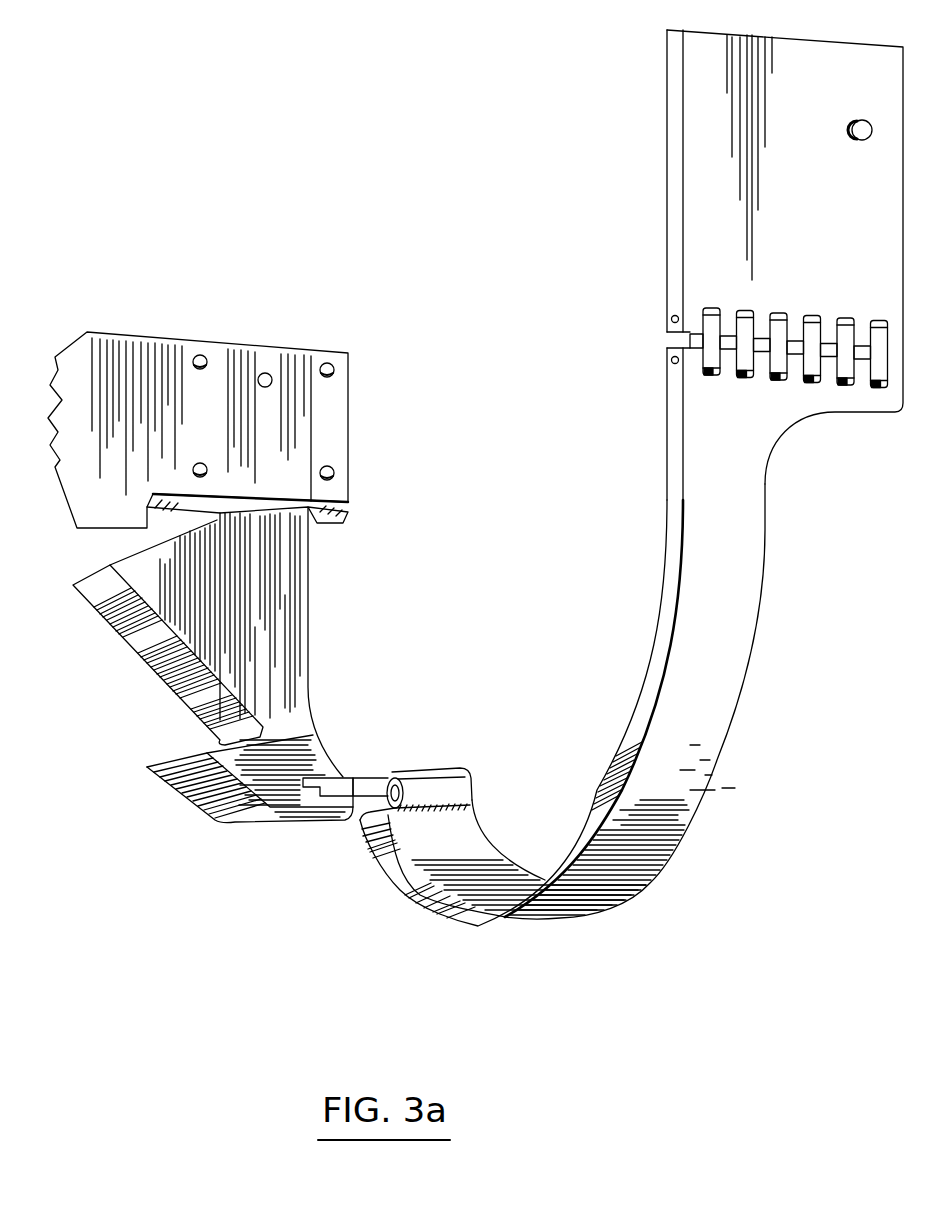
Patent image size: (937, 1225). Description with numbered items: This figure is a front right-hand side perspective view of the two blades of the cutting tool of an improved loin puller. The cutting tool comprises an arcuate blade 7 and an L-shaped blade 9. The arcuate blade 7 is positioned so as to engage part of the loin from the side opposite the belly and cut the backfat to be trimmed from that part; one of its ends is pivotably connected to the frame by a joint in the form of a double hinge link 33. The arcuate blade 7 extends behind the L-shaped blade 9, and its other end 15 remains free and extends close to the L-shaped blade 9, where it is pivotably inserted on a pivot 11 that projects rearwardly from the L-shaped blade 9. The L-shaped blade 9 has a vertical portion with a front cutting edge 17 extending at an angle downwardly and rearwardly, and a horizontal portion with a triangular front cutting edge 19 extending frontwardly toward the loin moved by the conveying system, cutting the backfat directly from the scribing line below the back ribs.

The arcuate blade 7 is at (583, 812).
The L-shaped blade 9 is at (320, 647).
The pivot 11 is at (383, 786).
The free end of the arcuate blade 15 is at (433, 770).
The front cutting edge of the vertical portion 17 is at (110, 643).
The front cutting edge of the horizontal portion 19 is at (147, 767).
The double hinge link 33 is at (650, 340).